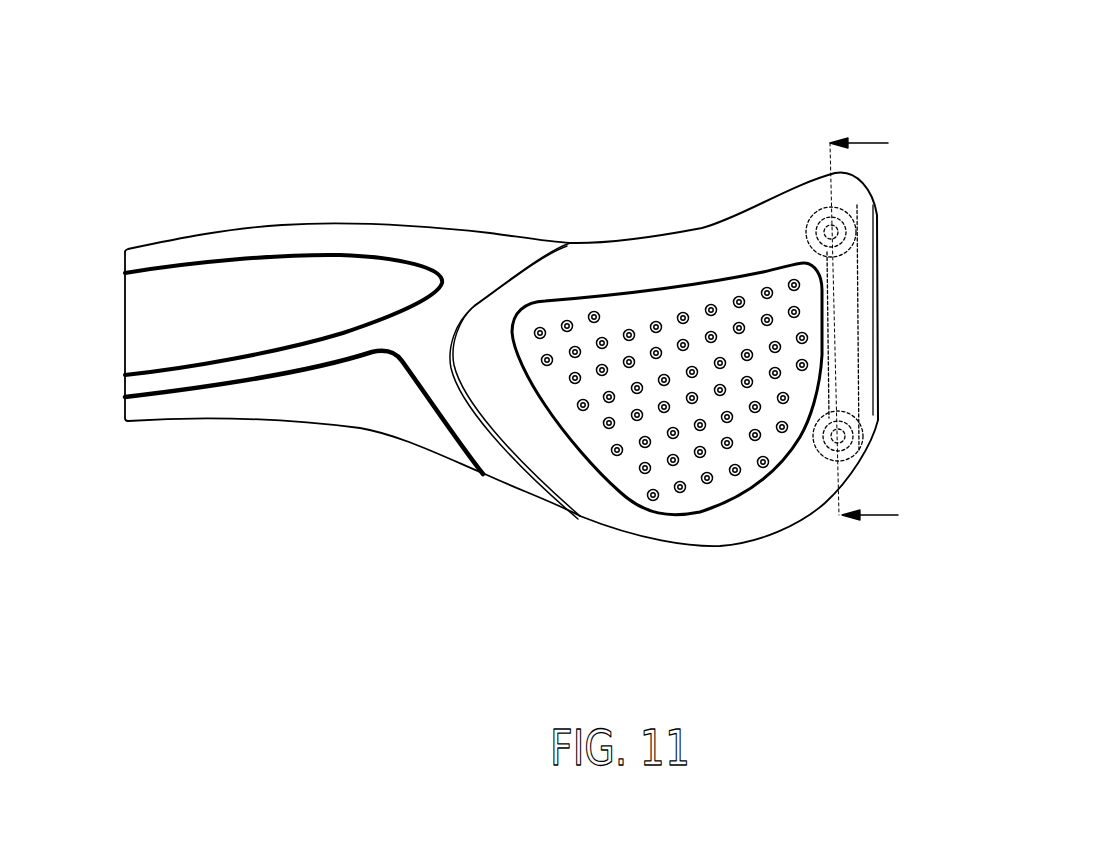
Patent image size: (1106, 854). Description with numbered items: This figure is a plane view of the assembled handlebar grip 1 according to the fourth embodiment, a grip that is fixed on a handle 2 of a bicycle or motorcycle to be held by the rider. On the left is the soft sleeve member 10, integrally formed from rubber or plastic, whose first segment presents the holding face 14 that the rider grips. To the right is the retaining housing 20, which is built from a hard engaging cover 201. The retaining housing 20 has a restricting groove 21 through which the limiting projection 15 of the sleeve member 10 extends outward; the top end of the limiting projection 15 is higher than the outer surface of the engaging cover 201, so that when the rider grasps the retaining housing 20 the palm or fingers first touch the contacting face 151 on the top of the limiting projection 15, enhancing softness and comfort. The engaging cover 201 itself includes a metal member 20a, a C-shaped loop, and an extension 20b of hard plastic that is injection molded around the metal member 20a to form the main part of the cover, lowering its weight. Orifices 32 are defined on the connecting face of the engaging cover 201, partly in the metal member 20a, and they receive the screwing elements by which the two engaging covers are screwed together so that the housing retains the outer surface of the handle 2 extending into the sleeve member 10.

The handlebar grip 1 is at (523, 165).
The sleeve member 10 is at (282, 225).
The holding face 14 is at (295, 398).
The retaining housing 20 is at (702, 228).
The restricting groove 21 is at (693, 513).
The limiting projection 15 is at (622, 493).
The contacting face 151 is at (638, 318).
The orifice 32 is at (845, 218).
The engaging cover 201 is at (1012, 222).
The metal member 20a is at (853, 335).
The extension 20b is at (864, 252).
The handle 2 is at (882, 327).